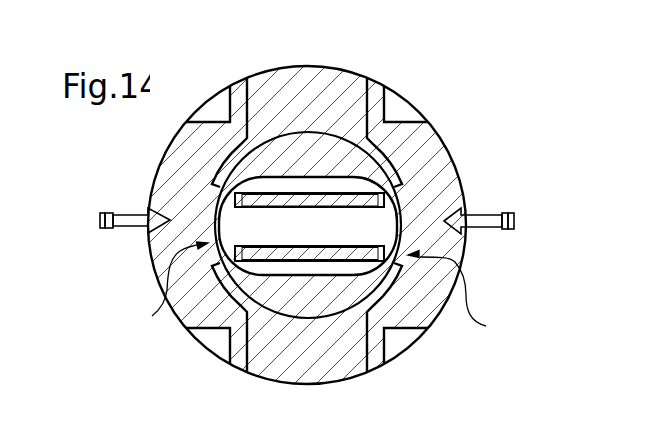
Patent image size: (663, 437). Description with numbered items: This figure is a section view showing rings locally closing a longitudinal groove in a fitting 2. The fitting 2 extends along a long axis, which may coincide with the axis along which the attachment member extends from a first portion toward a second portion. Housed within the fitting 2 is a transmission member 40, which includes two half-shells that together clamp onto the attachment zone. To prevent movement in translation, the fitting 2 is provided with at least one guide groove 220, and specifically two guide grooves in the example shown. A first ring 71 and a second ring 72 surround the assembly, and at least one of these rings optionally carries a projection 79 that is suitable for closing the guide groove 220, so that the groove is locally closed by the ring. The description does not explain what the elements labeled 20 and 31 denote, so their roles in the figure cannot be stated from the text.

The fitting 2 is at (331, 82).
The flow passage of closure member 20 is at (372, 198).
The tube 31 is at (362, 230).
The transmission member 40 is at (292, 145).
The first ring 71 is at (463, 193).
The second ring 72 is at (153, 267).
The projection 79 is at (207, 212).
The guide groove 220 is at (323, 292).